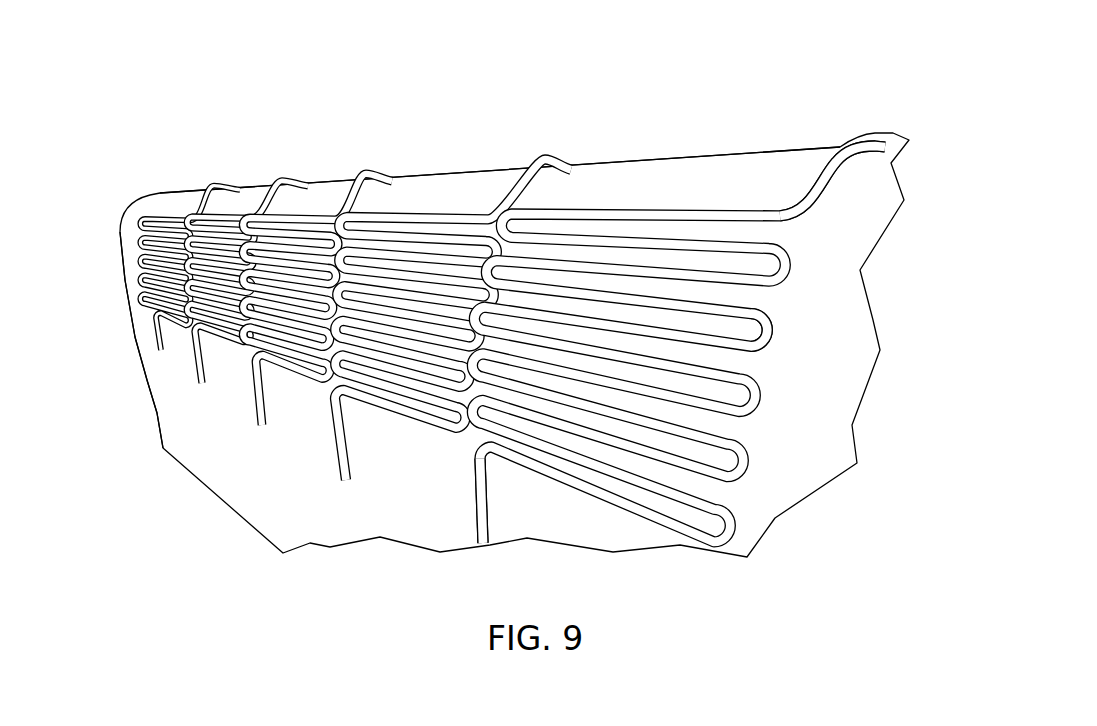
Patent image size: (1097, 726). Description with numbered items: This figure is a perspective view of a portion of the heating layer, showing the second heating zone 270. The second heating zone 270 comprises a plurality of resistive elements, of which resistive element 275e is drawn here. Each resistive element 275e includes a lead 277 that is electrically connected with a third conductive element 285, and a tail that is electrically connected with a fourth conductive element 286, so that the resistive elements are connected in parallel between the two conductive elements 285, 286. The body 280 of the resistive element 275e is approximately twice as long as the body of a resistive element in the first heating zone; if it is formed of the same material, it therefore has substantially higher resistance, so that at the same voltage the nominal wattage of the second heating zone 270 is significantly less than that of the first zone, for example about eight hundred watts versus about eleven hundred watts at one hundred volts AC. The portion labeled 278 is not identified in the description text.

The second heating zone 270 is at (791, 112).
The resistive element 275e is at (650, 514).
The lead 277 is at (476, 507).
The upper lip / bend of tube 278 is at (837, 178).
The body 280 is at (772, 333).
The third conductive element 285 is at (165, 415).
The fourth conductive element 286 is at (441, 179).